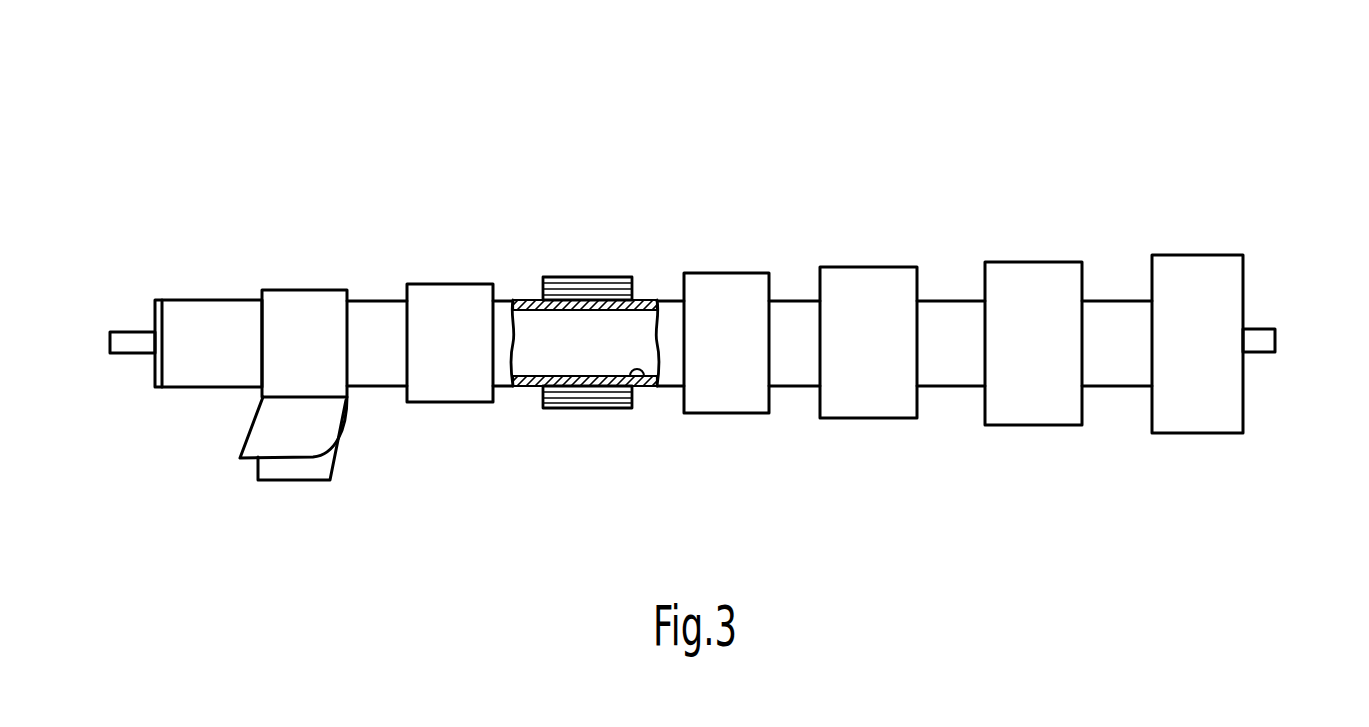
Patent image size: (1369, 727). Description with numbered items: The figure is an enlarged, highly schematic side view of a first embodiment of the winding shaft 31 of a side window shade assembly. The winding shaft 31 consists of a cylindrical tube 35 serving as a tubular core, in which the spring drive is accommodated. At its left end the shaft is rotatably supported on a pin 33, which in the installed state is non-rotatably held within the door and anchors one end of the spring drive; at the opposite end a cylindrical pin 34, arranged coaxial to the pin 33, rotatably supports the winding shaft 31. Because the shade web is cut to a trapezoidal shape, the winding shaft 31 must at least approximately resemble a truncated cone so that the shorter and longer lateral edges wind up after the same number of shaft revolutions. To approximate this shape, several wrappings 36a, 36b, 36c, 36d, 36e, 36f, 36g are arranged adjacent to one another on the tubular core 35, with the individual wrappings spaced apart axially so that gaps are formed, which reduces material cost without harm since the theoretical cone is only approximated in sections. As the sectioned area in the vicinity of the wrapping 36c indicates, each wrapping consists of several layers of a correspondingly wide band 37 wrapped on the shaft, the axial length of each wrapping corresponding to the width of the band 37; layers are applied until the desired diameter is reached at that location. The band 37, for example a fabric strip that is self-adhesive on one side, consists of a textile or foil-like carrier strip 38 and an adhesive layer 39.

The winding shaft 31 is at (852, 172).
The pin 33 is at (132, 345).
The cylindrical pin 34 is at (1257, 340).
The cylindrical tube 35 is at (645, 382).
The wrapping 36a is at (298, 292).
The wrapping 36b is at (443, 286).
The wrapping 36c is at (588, 278).
The wrapping 36d is at (727, 278).
The wrapping 36e is at (873, 408).
The wrapping 36f is at (1042, 425).
The wrapping 36g is at (1210, 433).
The band 37 is at (583, 407).
The carrier strip 38 is at (327, 462).
The adhesive layer 39 is at (273, 432).